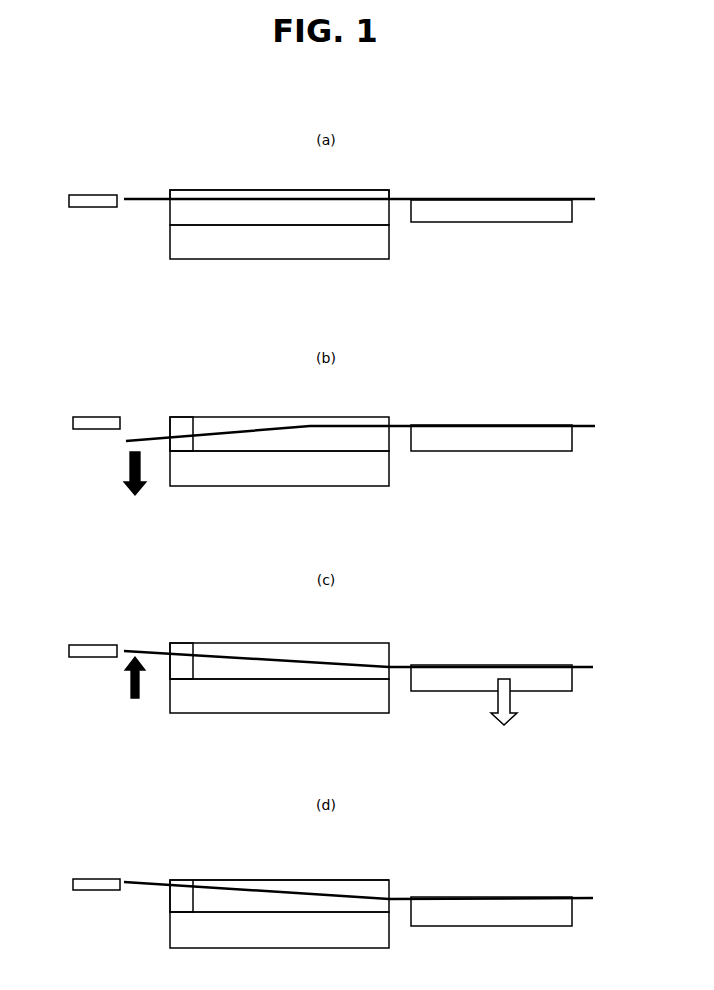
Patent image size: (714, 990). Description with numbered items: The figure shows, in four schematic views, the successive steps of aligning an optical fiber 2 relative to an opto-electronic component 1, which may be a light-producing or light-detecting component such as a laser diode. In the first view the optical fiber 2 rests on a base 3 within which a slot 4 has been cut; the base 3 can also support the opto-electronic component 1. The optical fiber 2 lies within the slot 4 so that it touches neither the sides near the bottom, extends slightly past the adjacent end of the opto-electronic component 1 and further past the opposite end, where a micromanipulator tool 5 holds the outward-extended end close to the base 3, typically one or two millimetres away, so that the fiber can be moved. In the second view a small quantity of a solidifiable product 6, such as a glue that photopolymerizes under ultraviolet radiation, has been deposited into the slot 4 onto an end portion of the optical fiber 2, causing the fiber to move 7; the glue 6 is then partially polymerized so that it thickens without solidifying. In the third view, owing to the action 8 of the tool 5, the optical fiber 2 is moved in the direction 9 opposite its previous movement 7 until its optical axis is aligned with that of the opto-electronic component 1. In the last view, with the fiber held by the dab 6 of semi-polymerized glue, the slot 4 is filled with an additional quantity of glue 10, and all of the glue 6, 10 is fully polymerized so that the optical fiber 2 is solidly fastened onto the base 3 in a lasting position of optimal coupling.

The opto-electronic component 1 is at (104, 200).
The optical fiber 2 is at (223, 200).
The base 3 is at (288, 243).
The slot 4 is at (377, 217).
The micromanipulator tool 5 is at (518, 210).
The solidifiable product 6 is at (178, 420).
The movement of the optical fiber 7 is at (128, 464).
The action of the tool 8 is at (507, 698).
The direction of movement 9 is at (128, 683).
The additional quantity of glue 10 is at (358, 890).